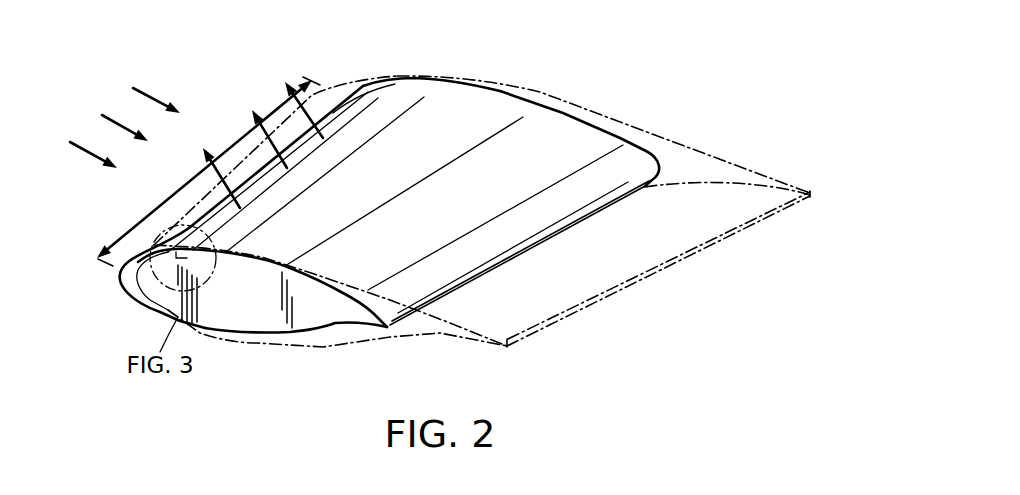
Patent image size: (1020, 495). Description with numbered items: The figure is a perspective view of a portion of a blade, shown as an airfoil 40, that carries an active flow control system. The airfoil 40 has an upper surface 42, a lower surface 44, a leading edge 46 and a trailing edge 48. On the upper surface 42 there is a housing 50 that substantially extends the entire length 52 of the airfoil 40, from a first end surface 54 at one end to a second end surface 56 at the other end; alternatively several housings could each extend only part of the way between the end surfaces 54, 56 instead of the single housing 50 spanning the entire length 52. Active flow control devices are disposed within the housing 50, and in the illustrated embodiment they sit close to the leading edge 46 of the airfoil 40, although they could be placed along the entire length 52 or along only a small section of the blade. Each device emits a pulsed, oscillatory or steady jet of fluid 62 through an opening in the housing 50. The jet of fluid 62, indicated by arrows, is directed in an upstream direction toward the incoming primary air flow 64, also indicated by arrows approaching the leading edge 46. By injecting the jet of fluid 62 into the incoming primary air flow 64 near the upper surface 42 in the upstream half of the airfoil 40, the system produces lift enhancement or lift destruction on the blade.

The airfoil 40 is at (196, 47).
The upper surface 42 is at (453, 97).
The lower surface 44 is at (277, 334).
The leading edge 46 is at (138, 292).
The trailing edge 48 is at (392, 328).
The housing 50 is at (644, 152).
The entire length 52 is at (190, 181).
The first end surface 54 is at (234, 327).
The second end surface 56 is at (531, 100).
The jet of fluid 62 is at (328, 107).
The incoming primary air flow 64 is at (82, 151).